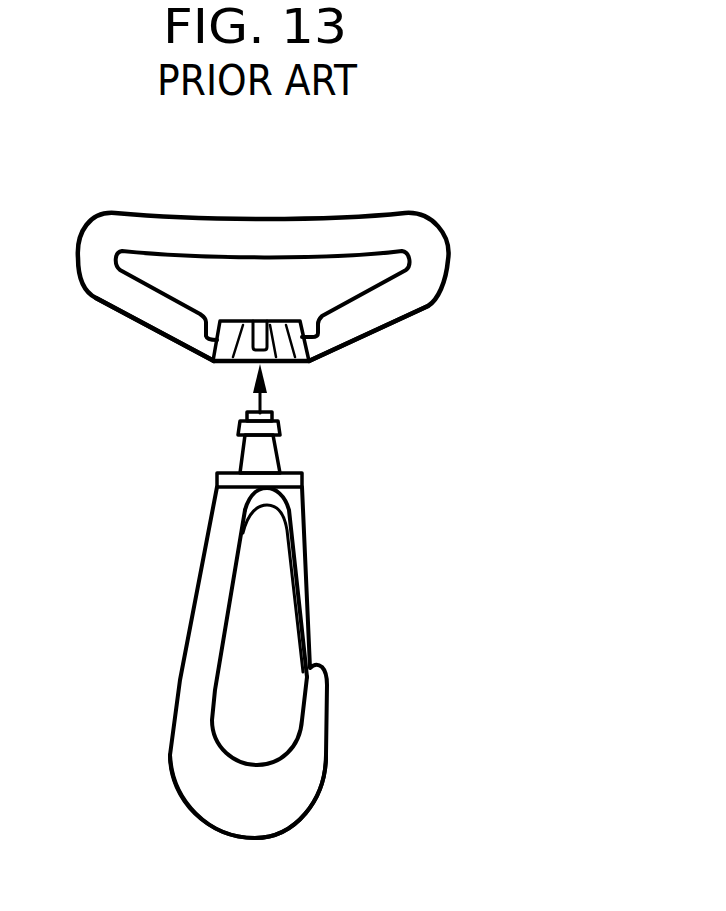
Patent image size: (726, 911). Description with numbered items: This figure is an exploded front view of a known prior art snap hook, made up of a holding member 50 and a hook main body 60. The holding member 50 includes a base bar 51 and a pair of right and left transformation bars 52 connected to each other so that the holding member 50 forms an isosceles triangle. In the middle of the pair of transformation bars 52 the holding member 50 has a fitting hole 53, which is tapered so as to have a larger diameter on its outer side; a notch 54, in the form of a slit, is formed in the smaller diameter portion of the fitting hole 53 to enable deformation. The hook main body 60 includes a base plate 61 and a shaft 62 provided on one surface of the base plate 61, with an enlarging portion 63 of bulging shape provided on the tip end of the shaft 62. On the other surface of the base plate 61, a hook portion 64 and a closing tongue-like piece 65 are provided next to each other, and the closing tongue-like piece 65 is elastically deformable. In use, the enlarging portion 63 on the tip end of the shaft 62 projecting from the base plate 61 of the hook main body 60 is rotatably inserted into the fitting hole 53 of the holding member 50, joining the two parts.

The holding member 50 is at (340, 212).
The base bar 51 is at (188, 236).
The transformation bars 52 is at (152, 308).
The fitting hole 53 is at (247, 363).
The notch 54 is at (263, 321).
The hook main body 60 is at (177, 702).
The base plate 61 is at (300, 473).
The shaft 62 is at (257, 455).
The enlarging portion 63 is at (278, 425).
The hook portion 64 is at (267, 813).
The closing tongue-like piece 65 is at (310, 575).